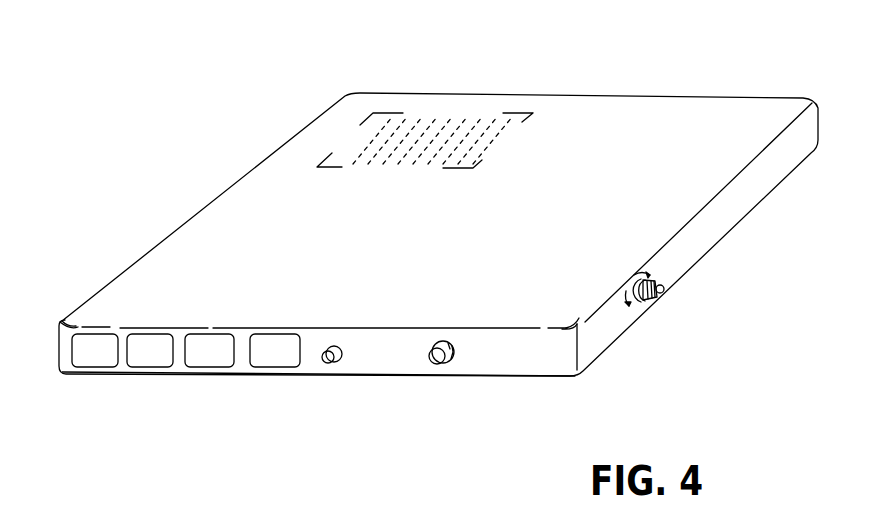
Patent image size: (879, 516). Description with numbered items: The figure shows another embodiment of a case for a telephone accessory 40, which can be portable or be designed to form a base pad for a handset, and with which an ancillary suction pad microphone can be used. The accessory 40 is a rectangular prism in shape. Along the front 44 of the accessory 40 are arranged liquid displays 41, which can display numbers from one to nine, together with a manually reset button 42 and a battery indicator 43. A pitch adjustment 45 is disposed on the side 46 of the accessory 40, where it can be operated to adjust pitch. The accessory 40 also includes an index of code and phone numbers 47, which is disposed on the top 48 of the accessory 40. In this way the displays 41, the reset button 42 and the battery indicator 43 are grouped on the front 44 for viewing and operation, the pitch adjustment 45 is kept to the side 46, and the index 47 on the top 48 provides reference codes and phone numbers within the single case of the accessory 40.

The telephone accessory 40 is at (535, 70).
The liquid displays 41 is at (98, 360).
The manually reset button 42 is at (326, 364).
The battery indicator 43 is at (428, 364).
The front 44 is at (553, 367).
The pitch adjustment 45 is at (665, 289).
The side 46 is at (792, 156).
The index of code and phone numbers 47 is at (425, 130).
The top 48 is at (732, 115).